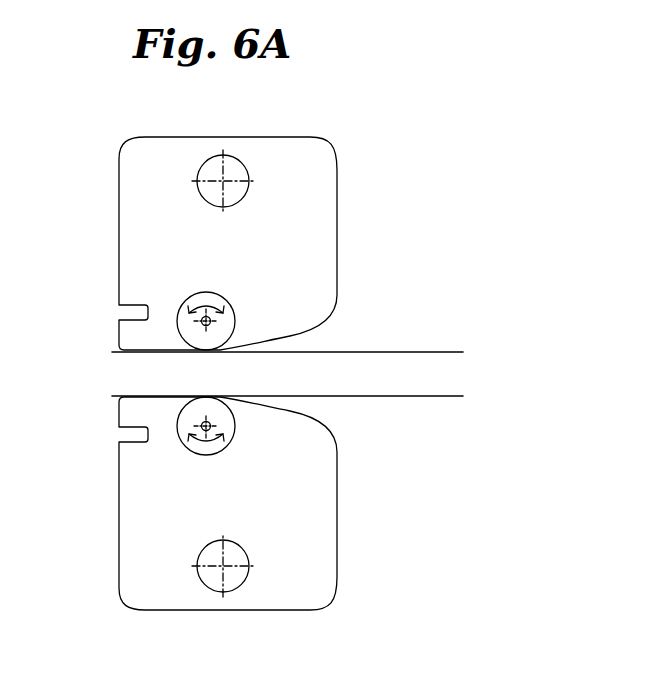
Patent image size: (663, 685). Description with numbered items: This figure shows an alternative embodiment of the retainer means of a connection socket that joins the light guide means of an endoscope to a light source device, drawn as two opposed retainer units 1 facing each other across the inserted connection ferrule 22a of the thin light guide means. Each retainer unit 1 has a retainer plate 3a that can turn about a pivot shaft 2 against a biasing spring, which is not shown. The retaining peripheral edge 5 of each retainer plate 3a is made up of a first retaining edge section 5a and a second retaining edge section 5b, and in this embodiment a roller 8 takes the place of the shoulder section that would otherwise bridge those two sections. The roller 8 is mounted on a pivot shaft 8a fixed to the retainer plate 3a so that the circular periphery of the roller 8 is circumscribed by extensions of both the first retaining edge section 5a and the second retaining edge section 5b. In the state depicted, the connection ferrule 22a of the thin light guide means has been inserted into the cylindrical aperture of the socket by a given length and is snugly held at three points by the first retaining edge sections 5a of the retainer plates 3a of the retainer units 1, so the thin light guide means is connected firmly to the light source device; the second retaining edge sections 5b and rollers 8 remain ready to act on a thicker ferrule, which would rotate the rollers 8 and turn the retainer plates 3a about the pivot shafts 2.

The retainer unit 1 is at (402, 173).
The pivot shaft 2 is at (234, 157).
The retainer plate 3a is at (337, 217).
The retaining peripheral edge 5 is at (290, 344).
The first retaining edge section 5a is at (148, 396).
The second retaining edge section 5b is at (288, 333).
The roller 8 is at (189, 298).
The pivot shaft 8a is at (211, 323).
The connection ferrule 22a is at (457, 310).